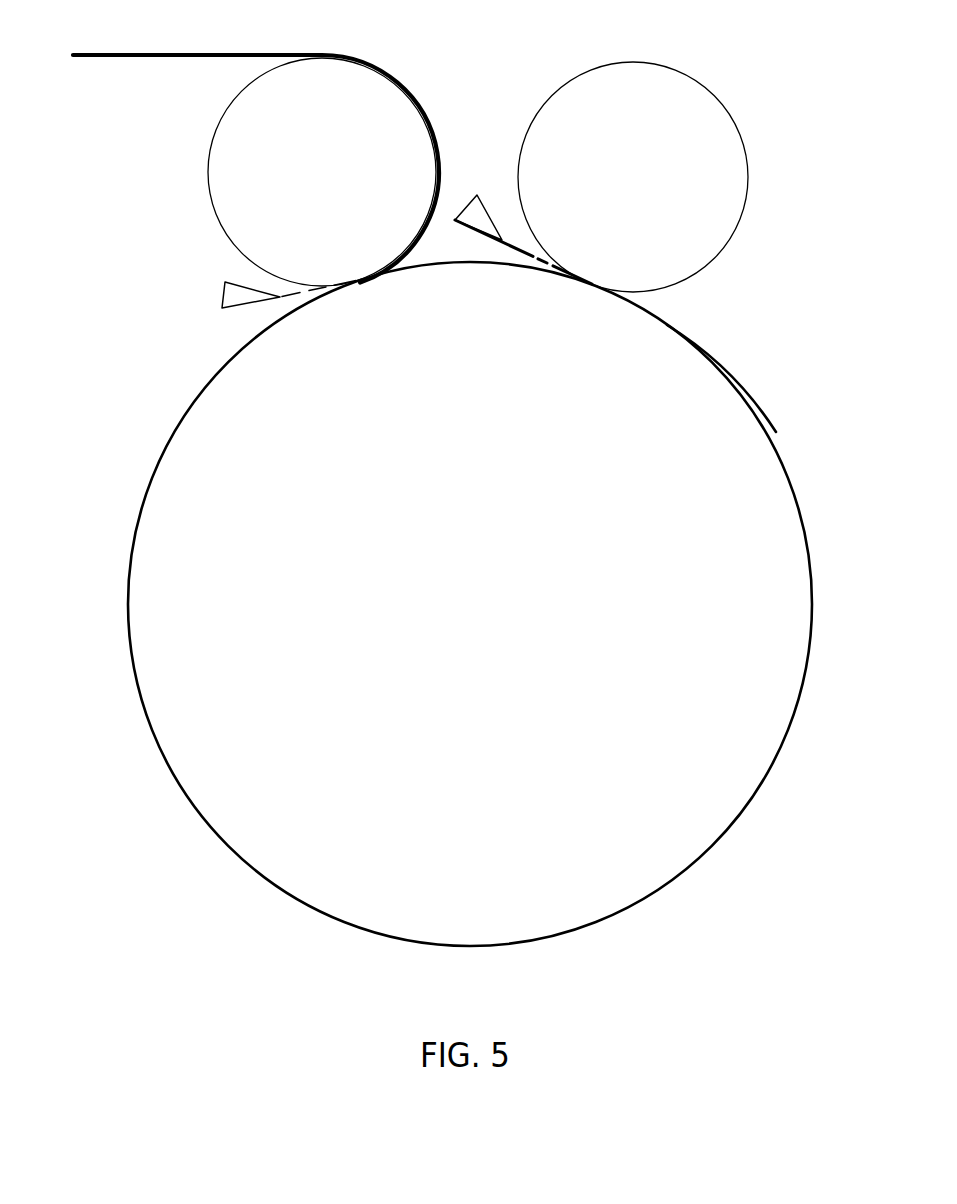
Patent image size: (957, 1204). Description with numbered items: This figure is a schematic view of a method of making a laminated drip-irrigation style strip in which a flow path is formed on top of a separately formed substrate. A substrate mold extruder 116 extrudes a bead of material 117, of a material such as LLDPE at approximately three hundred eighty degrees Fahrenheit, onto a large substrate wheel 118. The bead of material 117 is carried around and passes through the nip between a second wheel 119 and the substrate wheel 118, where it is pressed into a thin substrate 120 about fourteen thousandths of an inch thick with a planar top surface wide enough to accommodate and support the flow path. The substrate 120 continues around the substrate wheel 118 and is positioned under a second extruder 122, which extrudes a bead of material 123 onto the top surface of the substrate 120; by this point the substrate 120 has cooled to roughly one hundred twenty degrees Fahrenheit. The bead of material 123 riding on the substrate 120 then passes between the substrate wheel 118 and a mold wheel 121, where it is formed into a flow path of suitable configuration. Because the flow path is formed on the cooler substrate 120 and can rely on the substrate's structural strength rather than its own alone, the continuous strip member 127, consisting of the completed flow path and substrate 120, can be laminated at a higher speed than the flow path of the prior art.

The substrate mold extruder 116 is at (462, 215).
The bead of material 117 is at (512, 243).
The substrate wheel 118 is at (481, 621).
The second wheel 119 is at (748, 191).
The substrate 120 is at (740, 388).
The mold wheel 121 is at (336, 193).
The second extruder 122 is at (222, 297).
The bead of material 123 is at (280, 298).
The continuous strip member 127 is at (175, 54).